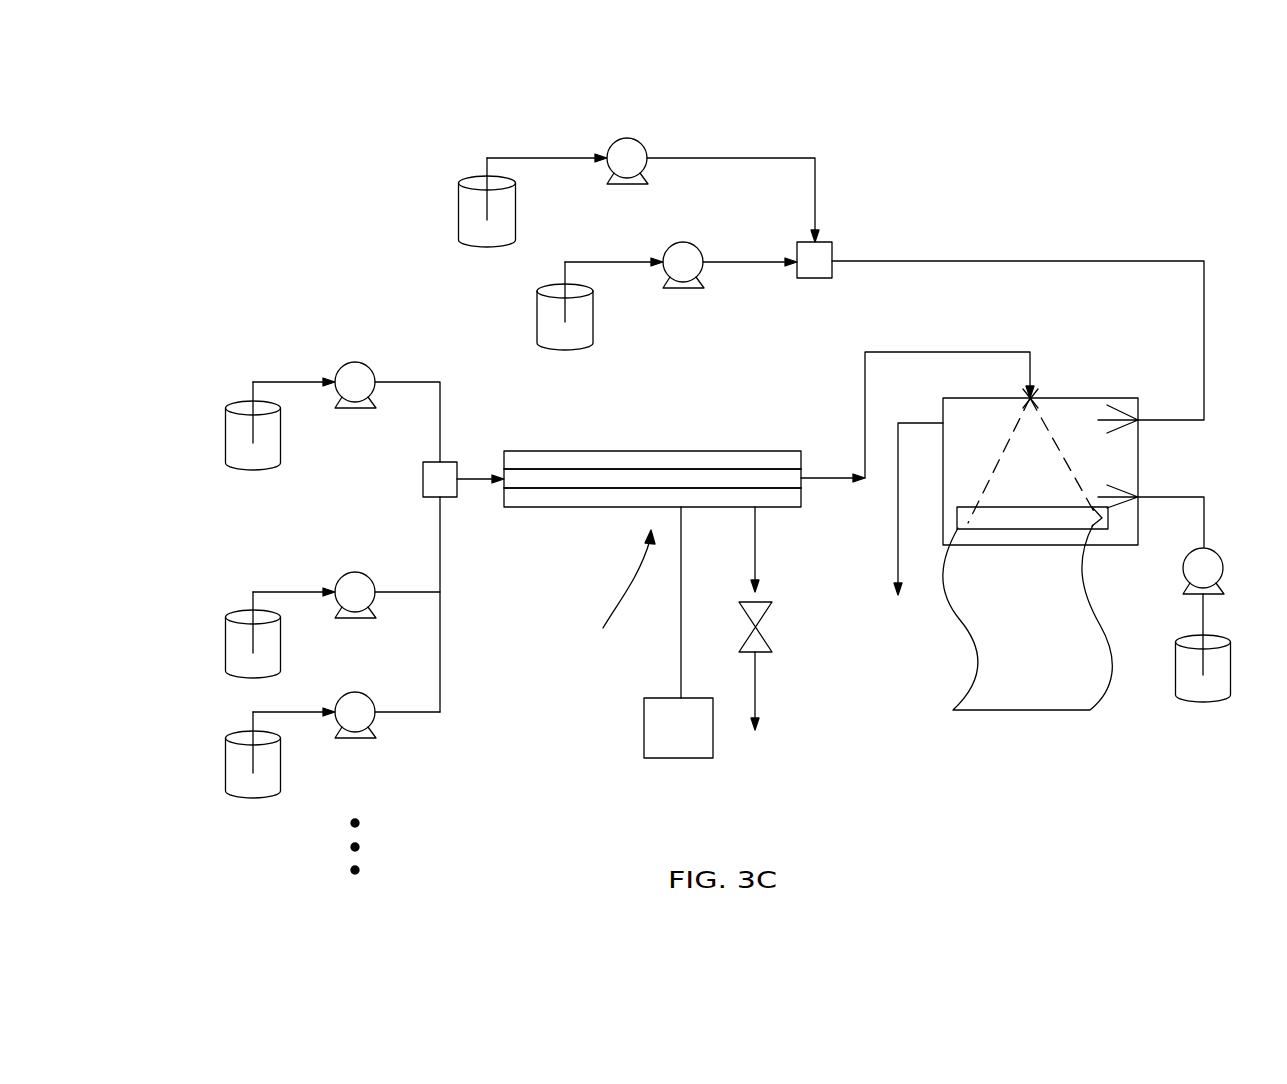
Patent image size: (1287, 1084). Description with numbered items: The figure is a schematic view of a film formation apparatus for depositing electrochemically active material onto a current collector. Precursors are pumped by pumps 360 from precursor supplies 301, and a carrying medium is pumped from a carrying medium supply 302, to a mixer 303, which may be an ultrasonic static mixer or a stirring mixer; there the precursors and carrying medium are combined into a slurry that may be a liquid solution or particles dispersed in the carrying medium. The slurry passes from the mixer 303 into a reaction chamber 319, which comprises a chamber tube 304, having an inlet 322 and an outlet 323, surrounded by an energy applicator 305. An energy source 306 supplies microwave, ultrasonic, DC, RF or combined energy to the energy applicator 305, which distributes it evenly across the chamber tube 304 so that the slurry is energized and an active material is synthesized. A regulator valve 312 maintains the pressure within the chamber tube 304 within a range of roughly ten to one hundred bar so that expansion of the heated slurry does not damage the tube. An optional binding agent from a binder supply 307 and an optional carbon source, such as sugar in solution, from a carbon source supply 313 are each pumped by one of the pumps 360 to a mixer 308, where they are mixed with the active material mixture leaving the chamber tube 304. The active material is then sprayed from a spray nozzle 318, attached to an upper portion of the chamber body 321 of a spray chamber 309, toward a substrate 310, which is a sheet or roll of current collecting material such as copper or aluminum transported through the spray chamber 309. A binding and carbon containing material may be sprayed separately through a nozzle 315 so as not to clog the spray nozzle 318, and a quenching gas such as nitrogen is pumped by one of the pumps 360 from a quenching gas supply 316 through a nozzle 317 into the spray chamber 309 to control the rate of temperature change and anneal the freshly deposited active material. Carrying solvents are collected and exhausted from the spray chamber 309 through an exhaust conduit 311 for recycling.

The precursor supply 301 is at (225, 647).
The carrying medium supply 302 is at (225, 440).
The mixer 303 is at (433, 498).
The chamber tube 304 is at (528, 482).
The energy applicator 305 is at (570, 508).
The energy source 306 is at (694, 742).
The binder supply 307 is at (537, 318).
The mixer 308 is at (815, 280).
The spray chamber 309 is at (1090, 418).
The substrate 310 is at (980, 672).
The exhaust conduit 311 is at (898, 540).
The regulator valve 312 is at (758, 628).
The carbon source supply 313 is at (458, 216).
The nozzle 315 is at (1138, 421).
The quenching gas supply 316 is at (1205, 705).
The nozzle 317 is at (1138, 497).
The spray nozzle 318 is at (1032, 396).
The reaction chamber 319 is at (617, 595).
The chamber body 321 is at (1118, 397).
The inlet 322 is at (503, 478).
The outlet 323 is at (803, 477).
The pump 360 is at (625, 186).